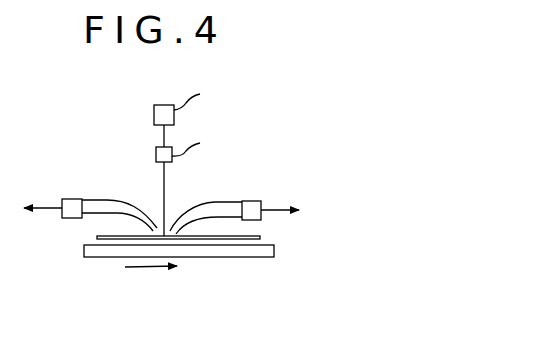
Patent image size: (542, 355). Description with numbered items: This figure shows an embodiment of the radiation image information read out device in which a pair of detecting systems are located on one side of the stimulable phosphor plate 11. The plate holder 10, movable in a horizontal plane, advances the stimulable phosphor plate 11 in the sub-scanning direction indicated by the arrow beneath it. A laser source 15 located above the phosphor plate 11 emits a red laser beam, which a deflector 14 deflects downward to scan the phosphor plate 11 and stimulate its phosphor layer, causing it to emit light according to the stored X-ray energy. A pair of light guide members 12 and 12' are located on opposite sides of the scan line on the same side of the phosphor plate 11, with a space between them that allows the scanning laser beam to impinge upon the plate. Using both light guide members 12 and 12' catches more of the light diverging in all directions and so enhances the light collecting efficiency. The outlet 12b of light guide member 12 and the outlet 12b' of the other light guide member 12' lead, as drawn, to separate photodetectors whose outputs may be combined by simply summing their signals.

The laser source 15 is at (153, 116).
The deflector 14 is at (156, 157).
The light guide member 12 is at (206, 197).
The outlet 12b is at (270, 190).
The light guide member 12' is at (112, 196).
The outlet 12b' is at (51, 190).
The stimulable phosphor plate 11 is at (98, 237).
The plate holder 10 is at (92, 256).